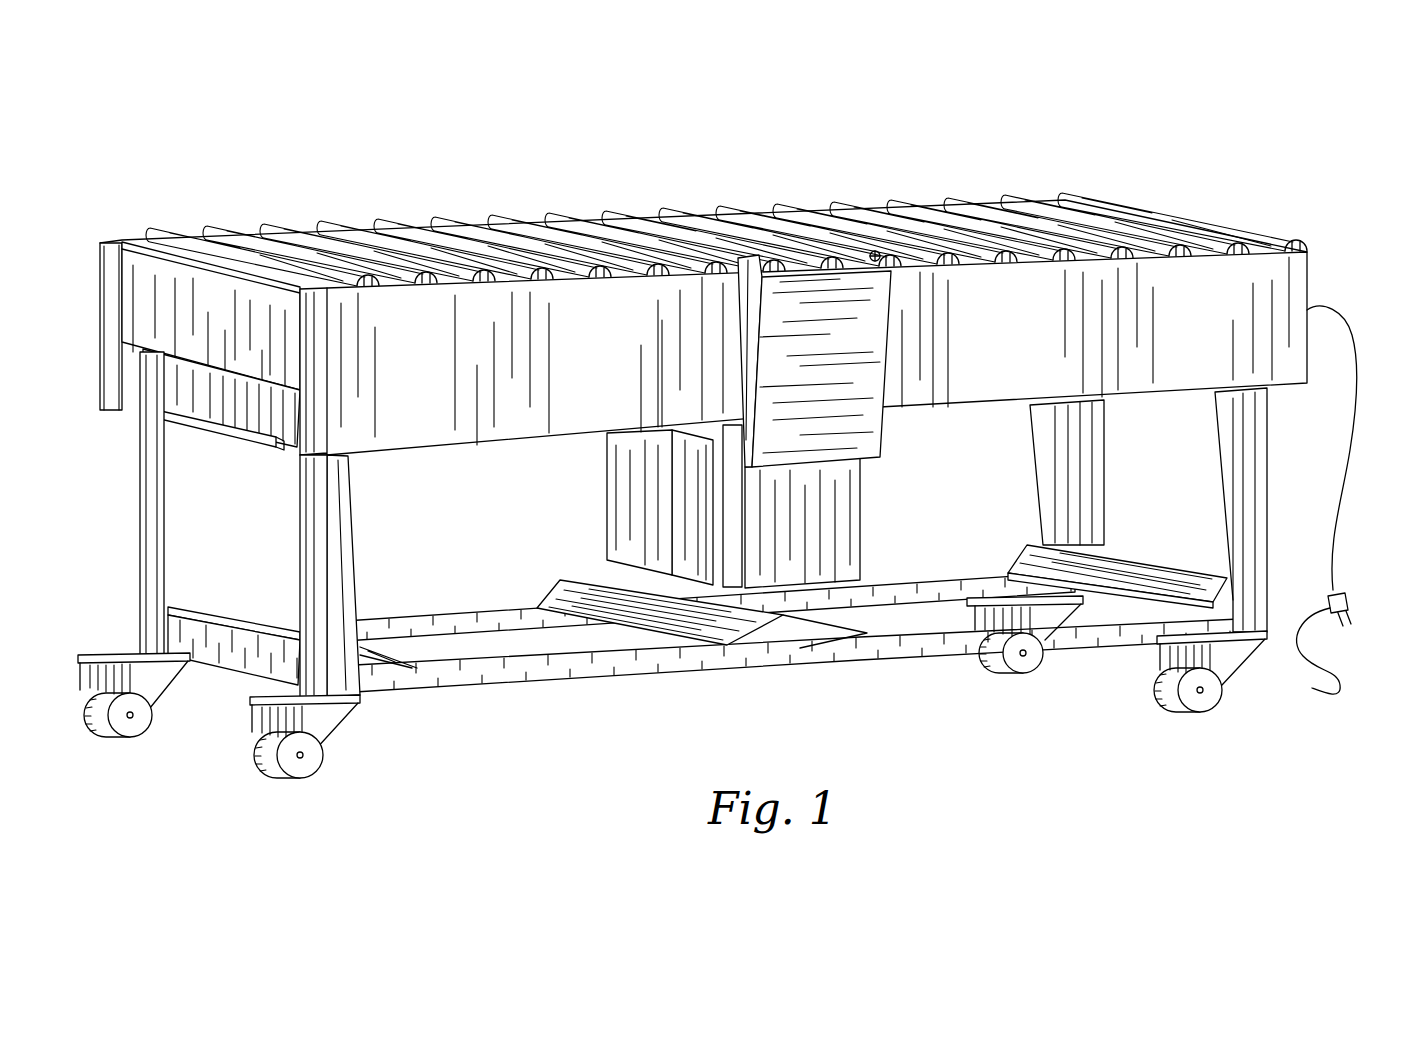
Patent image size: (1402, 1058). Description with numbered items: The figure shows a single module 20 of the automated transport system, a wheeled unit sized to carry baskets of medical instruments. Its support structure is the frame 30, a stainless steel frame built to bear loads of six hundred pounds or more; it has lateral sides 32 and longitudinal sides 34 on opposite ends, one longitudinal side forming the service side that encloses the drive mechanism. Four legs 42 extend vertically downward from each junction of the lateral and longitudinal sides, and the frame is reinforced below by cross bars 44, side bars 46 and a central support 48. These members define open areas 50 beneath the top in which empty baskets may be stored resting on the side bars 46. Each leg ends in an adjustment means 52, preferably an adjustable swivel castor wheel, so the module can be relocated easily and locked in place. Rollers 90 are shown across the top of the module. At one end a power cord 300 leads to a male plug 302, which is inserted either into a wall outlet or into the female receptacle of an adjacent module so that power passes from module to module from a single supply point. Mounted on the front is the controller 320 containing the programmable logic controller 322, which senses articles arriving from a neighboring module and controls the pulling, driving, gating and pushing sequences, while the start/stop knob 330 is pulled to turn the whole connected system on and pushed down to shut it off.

The module 20 is at (740, 454).
The frame 30 is at (103, 243).
The lateral sides 32 is at (187, 297).
The longitudinal sides 34 is at (412, 374).
The legs 42 is at (153, 534).
The cross bars 44 is at (234, 653).
The side bars 46 is at (453, 625).
The central support 48 is at (586, 577).
The open areas 50 is at (506, 558).
The adjustment means 52 is at (150, 737).
The rollers 90 is at (322, 228).
The power cord 300 is at (1368, 325).
The male plug 302 is at (1311, 655).
The controller 320 is at (761, 290).
The programmable logic controller 322 is at (775, 370).
The start/stop knob 330 is at (878, 252).